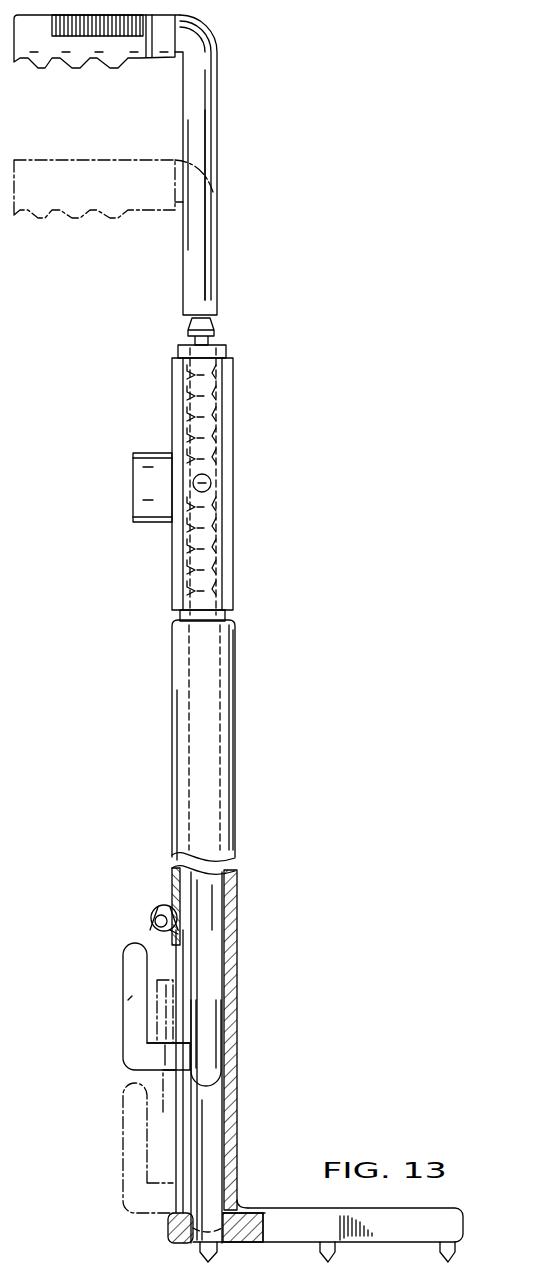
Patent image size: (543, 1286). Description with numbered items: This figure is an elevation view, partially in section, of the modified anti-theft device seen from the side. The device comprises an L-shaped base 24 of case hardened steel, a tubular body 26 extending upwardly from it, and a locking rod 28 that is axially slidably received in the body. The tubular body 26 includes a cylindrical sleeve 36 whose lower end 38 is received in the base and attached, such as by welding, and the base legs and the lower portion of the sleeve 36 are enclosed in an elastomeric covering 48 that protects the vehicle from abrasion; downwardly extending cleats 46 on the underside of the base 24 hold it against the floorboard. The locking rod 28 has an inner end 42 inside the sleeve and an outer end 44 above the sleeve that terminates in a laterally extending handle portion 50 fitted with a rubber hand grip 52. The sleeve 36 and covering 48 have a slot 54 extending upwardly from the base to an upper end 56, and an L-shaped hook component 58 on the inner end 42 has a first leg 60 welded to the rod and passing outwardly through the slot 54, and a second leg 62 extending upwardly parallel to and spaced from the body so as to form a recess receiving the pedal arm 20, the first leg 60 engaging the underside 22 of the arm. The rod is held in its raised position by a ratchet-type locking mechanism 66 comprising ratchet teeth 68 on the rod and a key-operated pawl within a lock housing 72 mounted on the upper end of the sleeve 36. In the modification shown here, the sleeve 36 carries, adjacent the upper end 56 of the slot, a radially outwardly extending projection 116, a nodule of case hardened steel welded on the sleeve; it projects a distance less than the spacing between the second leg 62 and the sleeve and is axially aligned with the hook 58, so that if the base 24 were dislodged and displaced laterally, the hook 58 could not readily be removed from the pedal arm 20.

The pedal arm 20 is at (165, 1017).
The underside 22 is at (164, 1102).
The L-shaped base 24 is at (297, 1207).
The tubular body 26 is at (239, 765).
The locking rod 28 is at (221, 222).
The cylindrical sleeve 36 is at (240, 1022).
The lower end 38 is at (229, 1203).
The inner end 42 is at (213, 895).
The outer end 44 is at (207, 130).
The cleats 46 is at (197, 1252).
The covering 48 is at (237, 672).
The handle portion 50 is at (178, 29).
The hand grip 52 is at (116, 53).
The slot 54 is at (184, 1157).
The upper end 56 is at (174, 934).
The hook component 58 is at (124, 965).
The first leg 60 is at (158, 1055).
The second leg 62 is at (130, 983).
The ratchet-type locking mechanism 66 is at (131, 453).
The ratchet teeth 68 is at (219, 336).
The lock housing 72 is at (172, 408).
The projection 116 is at (160, 906).